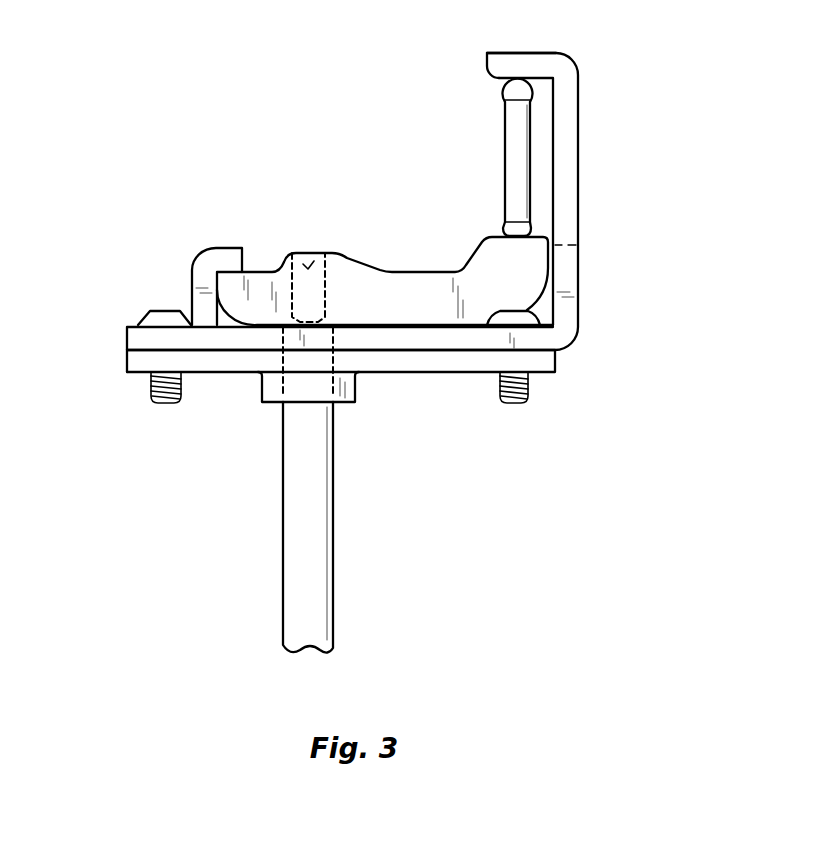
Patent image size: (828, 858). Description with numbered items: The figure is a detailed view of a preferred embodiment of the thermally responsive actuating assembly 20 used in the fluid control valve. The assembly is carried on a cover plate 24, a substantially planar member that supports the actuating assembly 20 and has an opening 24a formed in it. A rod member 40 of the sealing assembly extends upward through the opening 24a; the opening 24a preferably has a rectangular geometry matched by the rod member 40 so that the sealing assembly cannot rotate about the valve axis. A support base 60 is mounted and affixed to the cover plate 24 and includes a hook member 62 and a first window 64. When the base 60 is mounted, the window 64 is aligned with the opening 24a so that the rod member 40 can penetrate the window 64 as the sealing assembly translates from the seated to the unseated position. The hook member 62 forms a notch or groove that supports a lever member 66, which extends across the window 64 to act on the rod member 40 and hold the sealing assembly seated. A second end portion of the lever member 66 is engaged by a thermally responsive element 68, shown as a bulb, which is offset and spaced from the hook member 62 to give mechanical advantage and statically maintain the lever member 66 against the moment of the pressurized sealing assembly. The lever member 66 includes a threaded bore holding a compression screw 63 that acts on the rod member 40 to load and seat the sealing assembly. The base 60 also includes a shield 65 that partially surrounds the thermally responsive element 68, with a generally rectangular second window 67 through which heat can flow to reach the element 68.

The thermally responsive actuating assembly 20 is at (183, 132).
The cover plate 24 is at (127, 358).
The opening 24a is at (295, 362).
The rod member 40 is at (333, 530).
The support base 60 is at (127, 333).
The hook member 62 is at (197, 253).
The compression screw 63 is at (297, 252).
The first window 64 is at (323, 342).
The shield 65 is at (560, 55).
The lever member 66 is at (413, 272).
The second window 67 is at (583, 182).
The thermally responsive element 68 is at (503, 157).